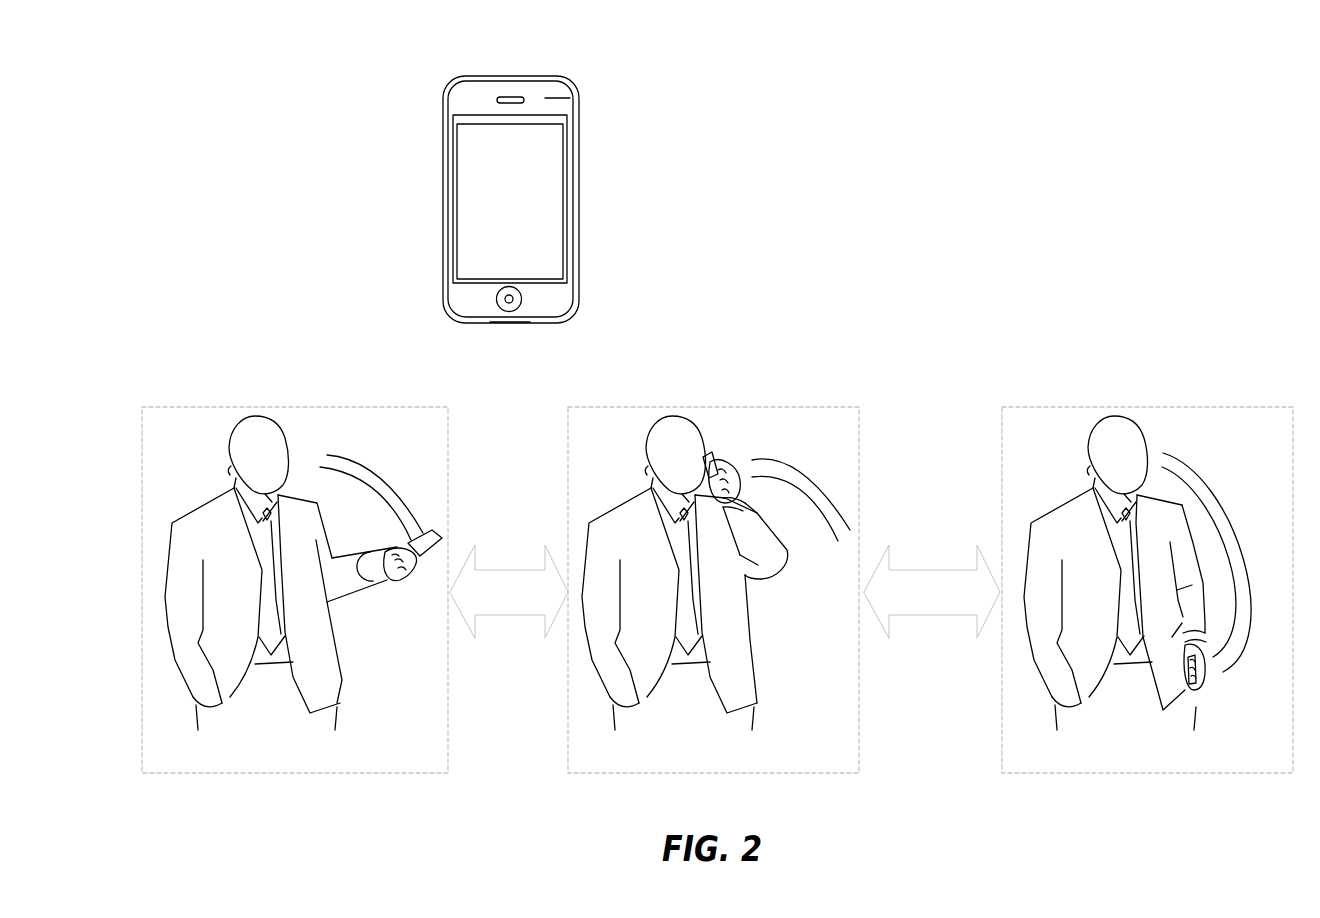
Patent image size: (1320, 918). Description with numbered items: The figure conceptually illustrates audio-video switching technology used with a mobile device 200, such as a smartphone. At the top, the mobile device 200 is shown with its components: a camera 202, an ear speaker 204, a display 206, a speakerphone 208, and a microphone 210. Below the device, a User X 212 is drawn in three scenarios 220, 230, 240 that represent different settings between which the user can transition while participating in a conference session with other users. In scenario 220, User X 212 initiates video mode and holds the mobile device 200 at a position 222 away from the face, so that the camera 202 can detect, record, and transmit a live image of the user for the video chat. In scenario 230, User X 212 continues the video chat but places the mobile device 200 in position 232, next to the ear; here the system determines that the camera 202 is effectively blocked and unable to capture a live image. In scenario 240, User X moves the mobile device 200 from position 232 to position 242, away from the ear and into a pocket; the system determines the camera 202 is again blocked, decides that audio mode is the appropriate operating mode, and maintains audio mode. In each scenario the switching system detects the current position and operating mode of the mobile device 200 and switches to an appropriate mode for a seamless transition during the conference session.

The mobile device 200 is at (828, 370).
The camera 202 is at (490, 100).
The ear speaker 204 is at (523, 100).
The display 206 is at (545, 161).
The speakerphone 208 is at (555, 322).
The microphone 210 is at (536, 323).
The User X 212 is at (253, 757).
The scenario 220 is at (393, 406).
The position 222 is at (417, 572).
The scenario 230 is at (800, 406).
The position 232 is at (725, 463).
The scenario 240 is at (1253, 406).
The position 242 is at (1198, 694).